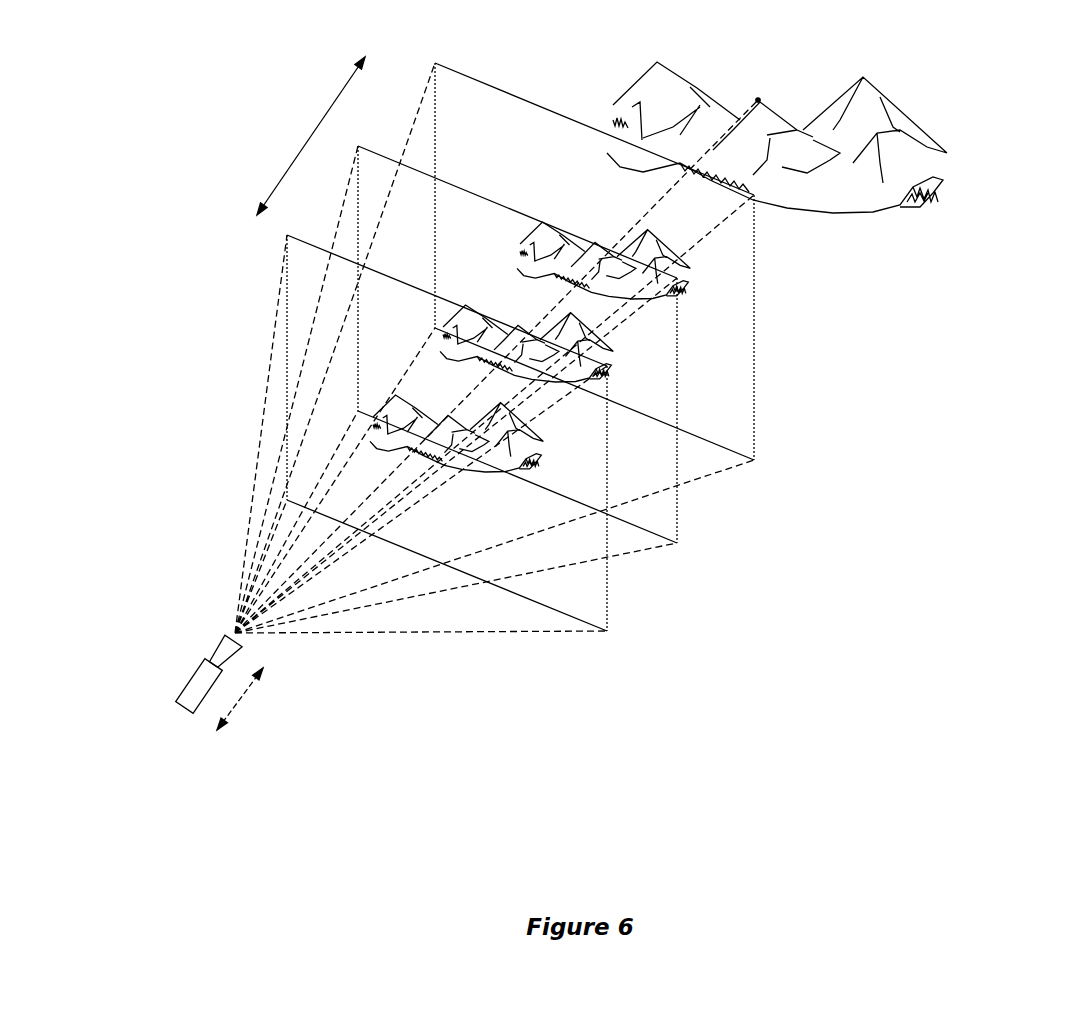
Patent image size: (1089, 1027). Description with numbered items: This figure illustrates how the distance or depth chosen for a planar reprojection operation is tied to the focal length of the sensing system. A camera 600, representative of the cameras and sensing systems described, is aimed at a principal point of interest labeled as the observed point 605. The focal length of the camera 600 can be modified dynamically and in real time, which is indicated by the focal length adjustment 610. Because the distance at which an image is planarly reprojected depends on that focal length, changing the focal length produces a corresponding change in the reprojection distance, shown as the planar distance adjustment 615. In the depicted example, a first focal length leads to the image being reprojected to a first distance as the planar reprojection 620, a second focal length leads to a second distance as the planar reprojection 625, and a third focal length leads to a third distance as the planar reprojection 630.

The camera 600 is at (187, 685).
The observed point 605 is at (760, 98).
The focal length adjustment 610 is at (242, 698).
The planar distance adjustment 615 is at (290, 168).
The planar reprojection 620 is at (607, 592).
The planar reprojection 625 is at (678, 512).
The planar reprojection 630 is at (758, 423).